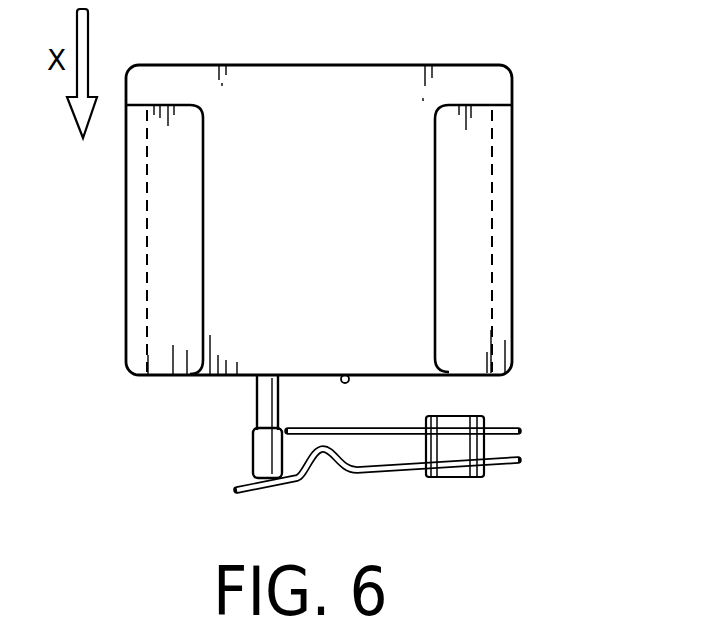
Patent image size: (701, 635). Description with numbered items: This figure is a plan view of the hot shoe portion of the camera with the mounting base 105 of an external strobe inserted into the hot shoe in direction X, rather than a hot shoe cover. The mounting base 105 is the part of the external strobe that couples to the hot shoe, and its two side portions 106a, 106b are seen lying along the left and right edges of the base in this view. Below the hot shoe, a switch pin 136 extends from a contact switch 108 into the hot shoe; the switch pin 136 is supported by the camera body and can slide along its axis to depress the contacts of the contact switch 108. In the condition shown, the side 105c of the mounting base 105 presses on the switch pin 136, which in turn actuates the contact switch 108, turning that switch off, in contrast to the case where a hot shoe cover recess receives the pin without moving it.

The mounting base 105 is at (339, 80).
The side of the mounting base 105c is at (345, 375).
The right side panel 106a is at (482, 227).
The left side panel 106b is at (158, 240).
The switch pin 136 is at (258, 412).
The contact switch 108 is at (440, 477).